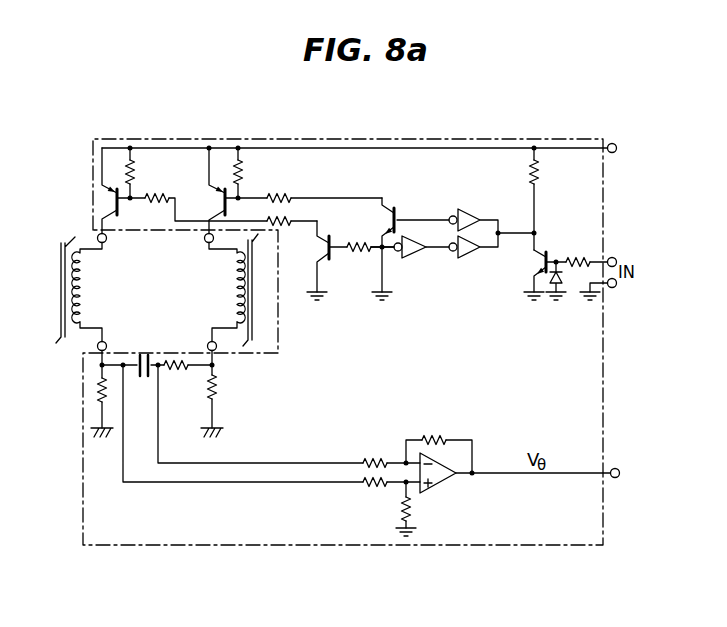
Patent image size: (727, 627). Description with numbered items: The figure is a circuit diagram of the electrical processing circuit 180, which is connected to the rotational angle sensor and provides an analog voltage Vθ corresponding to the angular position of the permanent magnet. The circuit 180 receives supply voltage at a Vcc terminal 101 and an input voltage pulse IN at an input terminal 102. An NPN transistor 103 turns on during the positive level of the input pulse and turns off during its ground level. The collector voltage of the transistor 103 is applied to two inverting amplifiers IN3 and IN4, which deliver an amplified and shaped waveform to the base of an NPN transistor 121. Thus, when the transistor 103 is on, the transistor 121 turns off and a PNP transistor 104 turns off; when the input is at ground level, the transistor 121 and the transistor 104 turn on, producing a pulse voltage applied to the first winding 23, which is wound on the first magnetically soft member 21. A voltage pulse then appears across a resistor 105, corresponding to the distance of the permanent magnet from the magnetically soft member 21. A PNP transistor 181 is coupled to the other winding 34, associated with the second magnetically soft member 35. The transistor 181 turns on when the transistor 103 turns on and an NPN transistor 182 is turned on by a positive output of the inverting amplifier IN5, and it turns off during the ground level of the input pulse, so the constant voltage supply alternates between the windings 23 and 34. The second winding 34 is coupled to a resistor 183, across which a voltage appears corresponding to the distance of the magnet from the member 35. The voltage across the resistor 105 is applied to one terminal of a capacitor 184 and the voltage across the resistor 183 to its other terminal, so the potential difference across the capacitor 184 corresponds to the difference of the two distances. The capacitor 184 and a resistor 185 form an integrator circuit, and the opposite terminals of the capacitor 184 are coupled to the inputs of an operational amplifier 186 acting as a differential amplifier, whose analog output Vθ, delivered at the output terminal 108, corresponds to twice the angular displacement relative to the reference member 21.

The electrical processing circuit 180 is at (126, 139).
The PNP transistor 181 is at (204, 198).
The NPN transistor 182 is at (402, 206).
The resistor 183 is at (219, 385).
The capacitor 184 is at (140, 379).
The resistor 185 is at (177, 373).
The operational amplifier 186 is at (438, 488).
The power supply terminal Vcc 101 is at (608, 144).
The input terminal 102 is at (613, 257).
The NPN transistor 103 is at (528, 269).
The PNP transistor 104 is at (123, 220).
The resistor 105 is at (99, 391).
The output terminal 108 is at (614, 468).
The NPN transistor 121 is at (329, 267).
The magnetically soft member 21 is at (65, 243).
The winding 23 is at (86, 277).
The winding 34 is at (233, 284).
The magnetically soft member 35 is at (253, 277).
The inverting amplifier IN3 is at (470, 259).
The inverting amplifier IN4 is at (418, 259).
The inverting amplifier IN5 is at (465, 208).